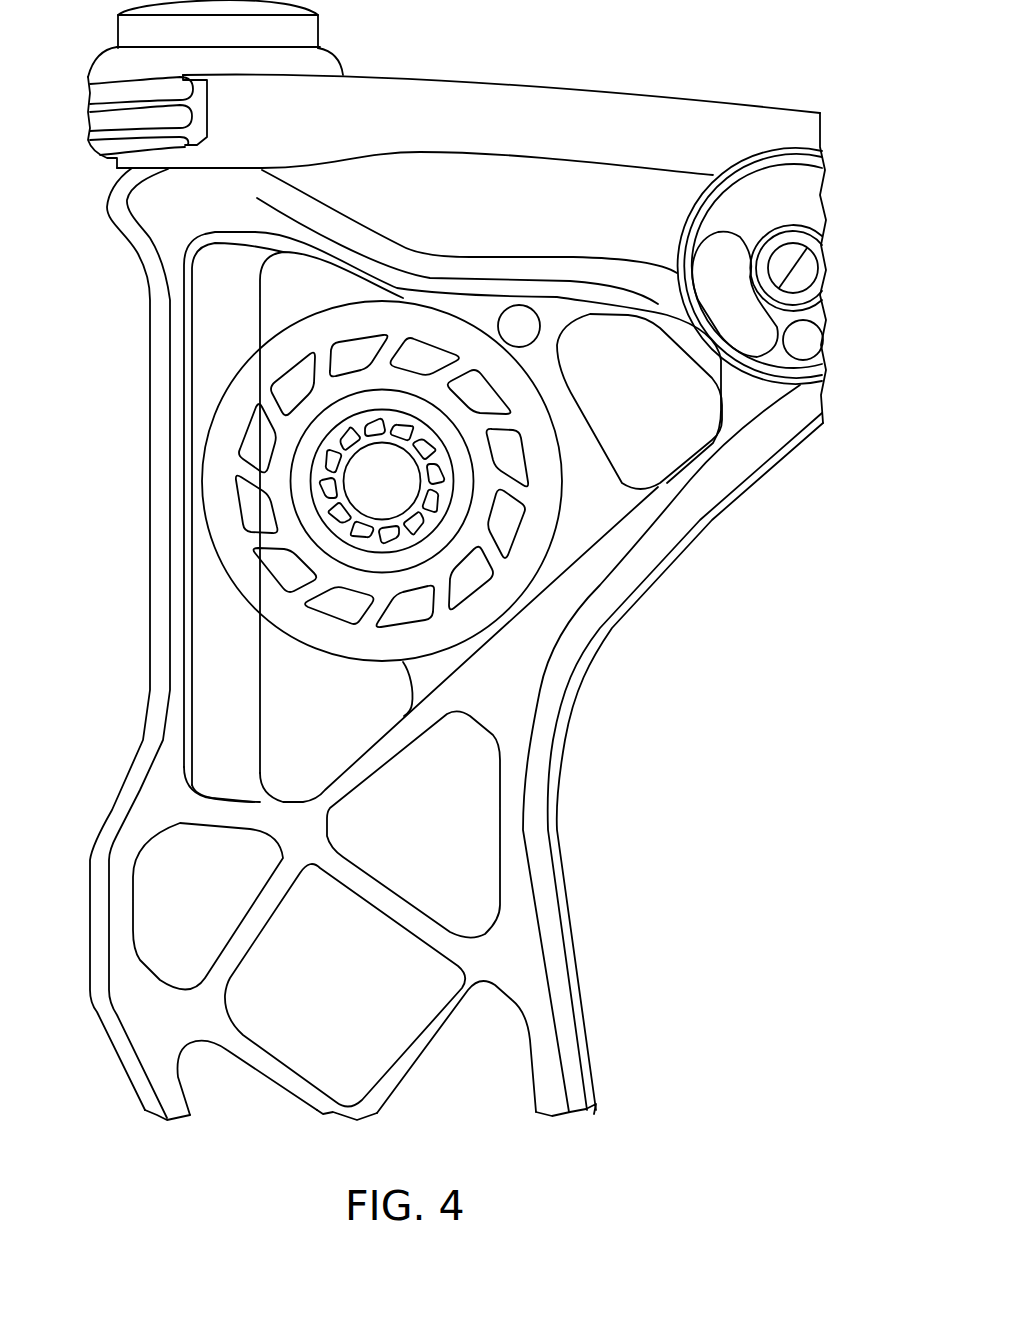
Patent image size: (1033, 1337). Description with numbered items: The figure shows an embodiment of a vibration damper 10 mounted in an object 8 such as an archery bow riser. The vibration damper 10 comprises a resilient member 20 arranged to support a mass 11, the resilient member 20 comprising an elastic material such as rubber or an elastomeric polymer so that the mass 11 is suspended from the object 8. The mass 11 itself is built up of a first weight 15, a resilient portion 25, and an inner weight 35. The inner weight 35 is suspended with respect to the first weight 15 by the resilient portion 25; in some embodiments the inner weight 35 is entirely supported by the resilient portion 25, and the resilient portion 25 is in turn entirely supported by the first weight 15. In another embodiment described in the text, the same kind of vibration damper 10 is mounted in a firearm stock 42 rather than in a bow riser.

The object 8 is at (118, 803).
The vibration damper 10 is at (540, 341).
The mass 11 is at (298, 453).
The first weight 15 is at (362, 397).
The resilient member 20 is at (452, 330).
The resilient portion 25 is at (447, 475).
The inner weight 35 is at (398, 493).
The firearm stock 42 is at (495, 88).